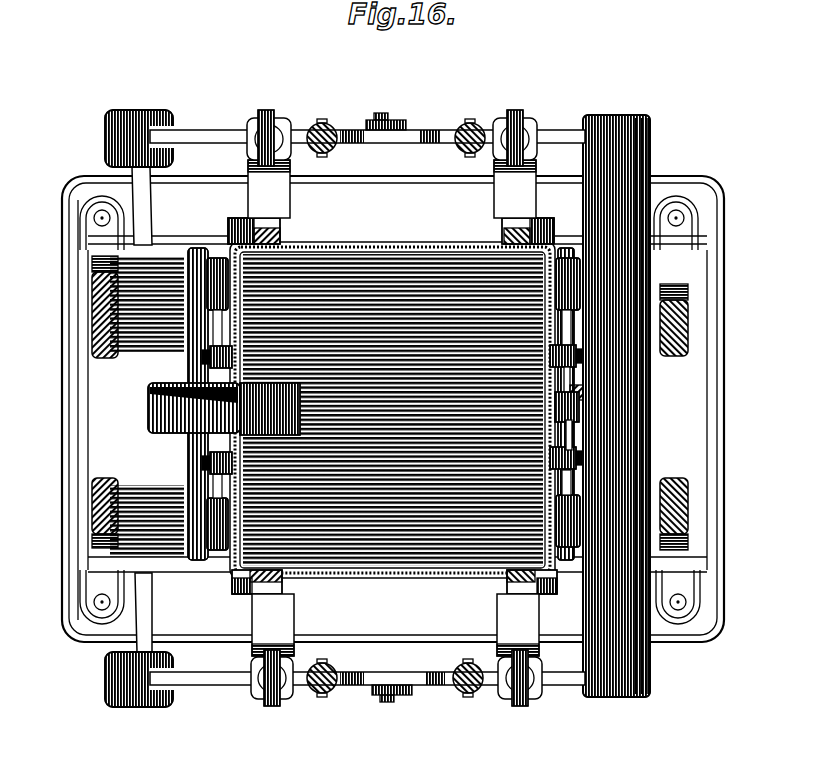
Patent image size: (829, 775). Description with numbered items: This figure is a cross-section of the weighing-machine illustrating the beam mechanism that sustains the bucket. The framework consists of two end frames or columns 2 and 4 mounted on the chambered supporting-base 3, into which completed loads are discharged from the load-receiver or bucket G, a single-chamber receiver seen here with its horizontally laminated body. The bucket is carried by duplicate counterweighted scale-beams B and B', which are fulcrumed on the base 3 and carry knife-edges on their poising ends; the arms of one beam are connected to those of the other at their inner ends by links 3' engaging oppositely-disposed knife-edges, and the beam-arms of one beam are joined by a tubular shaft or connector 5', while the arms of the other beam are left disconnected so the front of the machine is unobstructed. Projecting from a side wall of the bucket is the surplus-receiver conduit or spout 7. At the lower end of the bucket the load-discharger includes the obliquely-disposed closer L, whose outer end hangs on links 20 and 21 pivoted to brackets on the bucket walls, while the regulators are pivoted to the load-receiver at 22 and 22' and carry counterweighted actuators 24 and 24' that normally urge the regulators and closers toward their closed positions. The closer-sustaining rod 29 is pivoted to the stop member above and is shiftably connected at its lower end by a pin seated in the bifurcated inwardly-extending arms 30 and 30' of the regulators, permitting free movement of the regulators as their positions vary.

The end frame or column 2 is at (93, 330).
The chambered supporting-base 3 is at (379, 409).
The end frame or column 4 is at (688, 328).
The tubular shaft or connector 5' is at (663, 406).
The surplus-receiver conduit or spout 7 is at (157, 413).
The link 20 is at (252, 222).
The link 21 is at (242, 594).
The pivot of regulator 22 is at (381, 345).
The pivot of regulator 22' is at (383, 463).
The counterweighted actuator 24 is at (381, 404).
The counterweighted actuator 24' is at (589, 508).
The closer-sustaining rod 29 is at (582, 396).
The inwardly-extending arm 30 is at (590, 375).
The inwardly-extending arm 30' is at (594, 431).
The link 3' is at (395, 408).
The counterweighted scale-beam B is at (599, 405).
The counterweighted scale-beam B' is at (345, 409).
The bucket or load-receiver G is at (392, 245).
The closer or closer-plate L is at (393, 410).